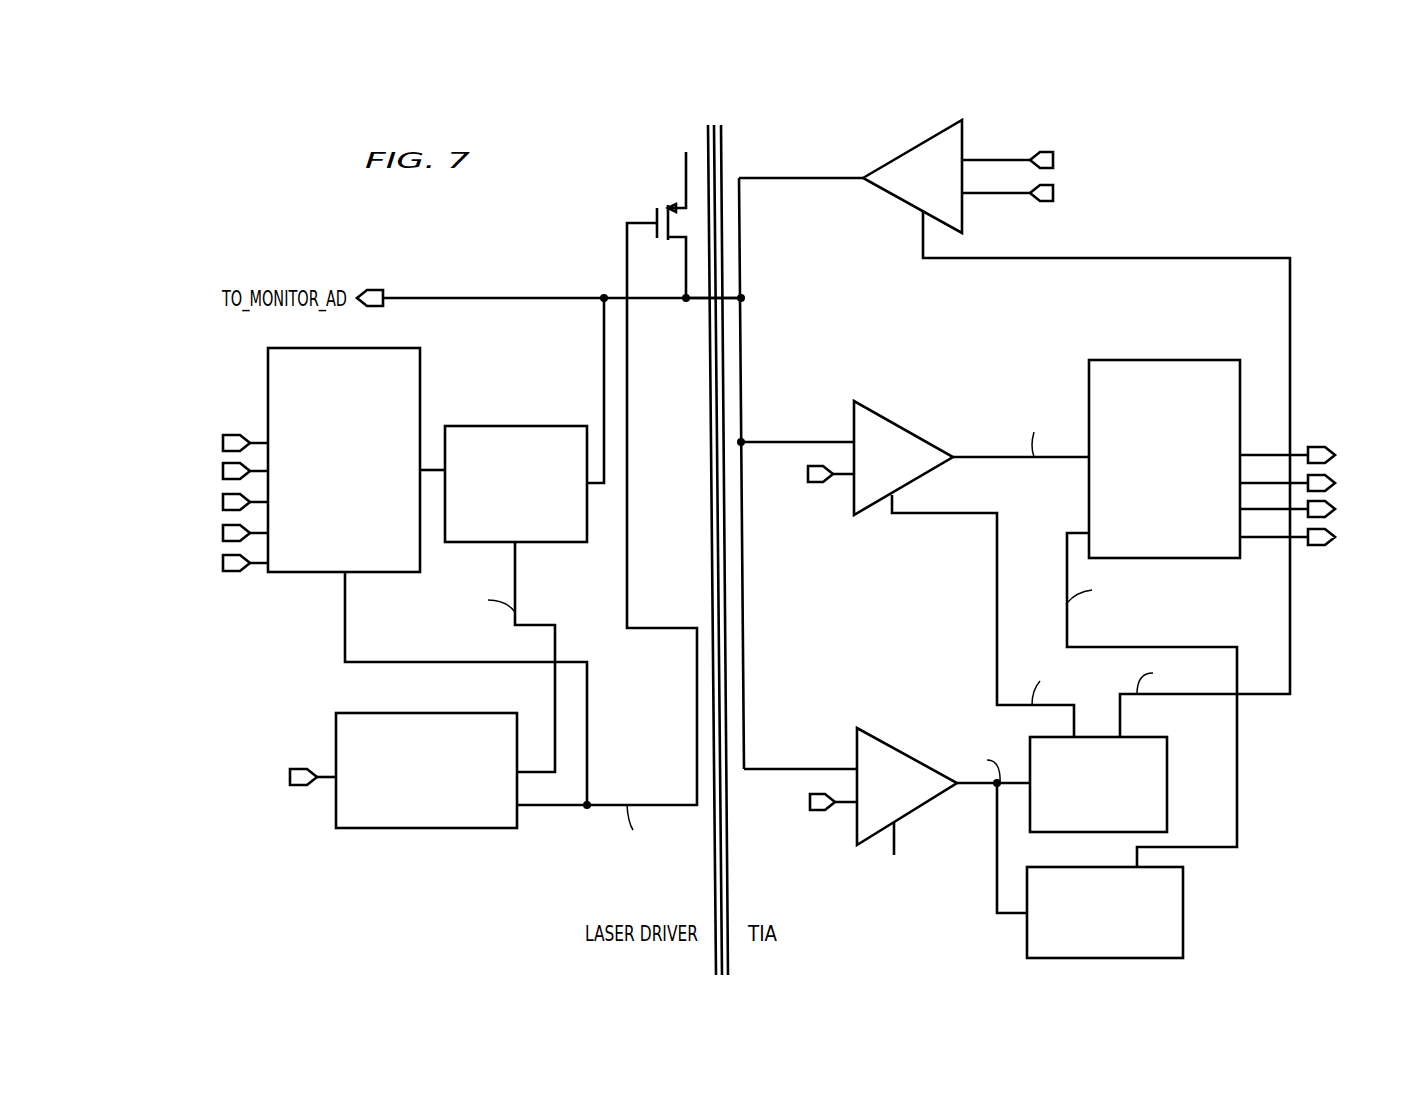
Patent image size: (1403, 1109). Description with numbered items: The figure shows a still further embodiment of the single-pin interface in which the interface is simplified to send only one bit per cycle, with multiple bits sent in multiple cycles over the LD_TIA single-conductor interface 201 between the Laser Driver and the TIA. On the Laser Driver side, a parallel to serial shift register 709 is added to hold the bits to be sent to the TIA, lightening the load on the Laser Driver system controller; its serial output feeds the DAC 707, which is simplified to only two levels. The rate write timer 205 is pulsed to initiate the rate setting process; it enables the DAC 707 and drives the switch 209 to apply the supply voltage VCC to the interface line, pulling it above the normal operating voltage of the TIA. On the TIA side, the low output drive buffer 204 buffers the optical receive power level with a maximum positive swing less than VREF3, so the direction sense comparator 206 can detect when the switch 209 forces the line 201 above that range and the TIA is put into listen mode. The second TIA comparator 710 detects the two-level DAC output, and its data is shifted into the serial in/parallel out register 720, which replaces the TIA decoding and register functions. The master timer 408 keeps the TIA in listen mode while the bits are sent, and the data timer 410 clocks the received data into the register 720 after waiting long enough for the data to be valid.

The parallel to serial shift register 709 is at (322, 348).
The DAC 707 is at (493, 426).
The rate write timer 205 is at (420, 713).
The switch 209 is at (657, 215).
The LD_TIA single-conductor interface 201 is at (702, 300).
The TIA low output drive buffer 204 is at (893, 157).
The second TIA comparator 710 is at (920, 435).
The serial in/parallel out register 720 is at (1138, 360).
The direction sense comparator 206 is at (853, 747).
The master timer 408 is at (1167, 773).
The data timer 410 is at (1183, 897).